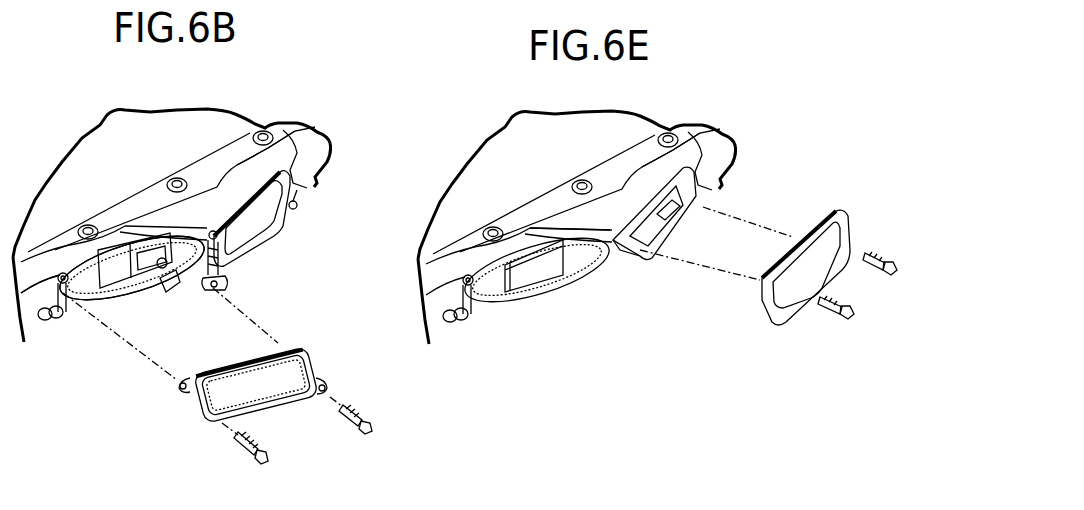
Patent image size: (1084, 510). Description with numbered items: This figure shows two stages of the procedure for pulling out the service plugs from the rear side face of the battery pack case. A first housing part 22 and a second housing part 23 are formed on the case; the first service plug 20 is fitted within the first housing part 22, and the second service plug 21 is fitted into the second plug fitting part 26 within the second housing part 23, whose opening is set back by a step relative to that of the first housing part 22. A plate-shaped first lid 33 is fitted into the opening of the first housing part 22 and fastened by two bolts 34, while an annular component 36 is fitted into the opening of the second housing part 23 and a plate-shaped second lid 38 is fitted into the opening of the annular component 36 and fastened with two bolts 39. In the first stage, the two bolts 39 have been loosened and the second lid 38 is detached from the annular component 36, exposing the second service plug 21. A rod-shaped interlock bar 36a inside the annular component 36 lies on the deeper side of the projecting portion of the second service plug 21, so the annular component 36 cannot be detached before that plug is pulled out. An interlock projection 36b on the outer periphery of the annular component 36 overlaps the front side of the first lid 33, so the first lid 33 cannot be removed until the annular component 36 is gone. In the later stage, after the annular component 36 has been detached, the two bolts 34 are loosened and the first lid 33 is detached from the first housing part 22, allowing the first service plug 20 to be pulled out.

In FIG. 6E, the first service plug 20 is at (663, 222).
In FIG. 6B, the second service plug 21 is at (130, 250).
In FIG. 6B, the first housing part 22 is at (243, 188).
In FIG. 6E, the first housing part 22 is at (648, 193).
In FIG. 6B, the second housing part 23 is at (162, 258).
In FIG. 6E, the second housing part 23 is at (575, 225).
In FIG. 6E, the second plug fitting part 26 is at (542, 268).
In FIG. 6B, the first lid 33 is at (258, 222).
In FIG. 6E, the first lid 33 is at (818, 258).
In FIG. 6B, the bolts 34 is at (213, 231).
In FIG. 6E, the bolts 34 is at (898, 268).
In FIG. 6B, the annular component 36 is at (143, 320).
In FIG. 6B, the interlock bar 36a is at (168, 288).
In FIG. 6B, the interlock projection 36b is at (214, 283).
In FIG. 6B, the second lid 38 is at (280, 390).
In FIG. 6B, the bolts 39 is at (262, 462).